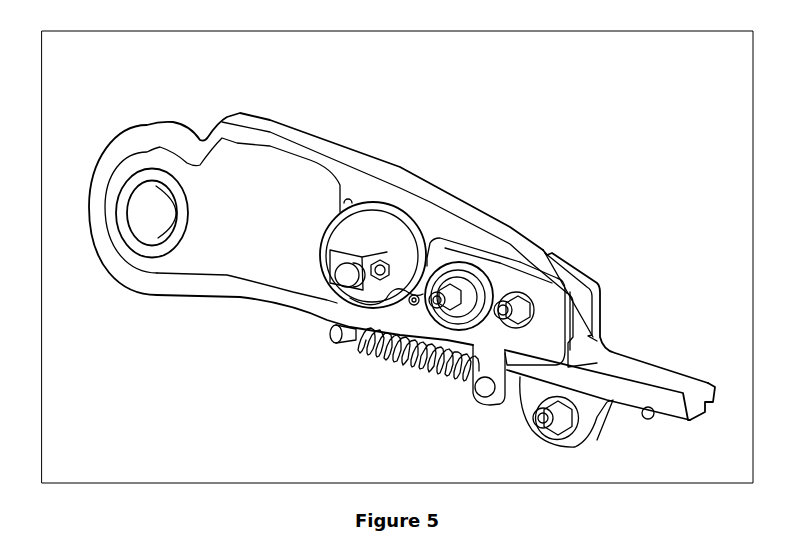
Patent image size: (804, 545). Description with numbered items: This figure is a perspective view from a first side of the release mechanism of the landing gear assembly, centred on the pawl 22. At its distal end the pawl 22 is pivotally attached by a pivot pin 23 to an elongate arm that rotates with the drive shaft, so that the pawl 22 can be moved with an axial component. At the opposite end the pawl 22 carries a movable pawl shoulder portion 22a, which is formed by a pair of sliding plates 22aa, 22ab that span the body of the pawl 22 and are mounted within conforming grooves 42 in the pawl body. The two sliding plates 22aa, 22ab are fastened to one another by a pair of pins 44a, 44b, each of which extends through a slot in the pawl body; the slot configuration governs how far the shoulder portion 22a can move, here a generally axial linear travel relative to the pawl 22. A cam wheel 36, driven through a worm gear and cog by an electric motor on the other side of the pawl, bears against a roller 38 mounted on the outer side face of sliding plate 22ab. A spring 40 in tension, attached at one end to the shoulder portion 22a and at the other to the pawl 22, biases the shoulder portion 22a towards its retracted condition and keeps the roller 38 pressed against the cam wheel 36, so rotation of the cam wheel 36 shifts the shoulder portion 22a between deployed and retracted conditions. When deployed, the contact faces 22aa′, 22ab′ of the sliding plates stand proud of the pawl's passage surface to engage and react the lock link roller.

The pawl 22 is at (248, 232).
The pivot pin 23 is at (147, 220).
The cam wheel 36 is at (347, 233).
The roller 38 is at (453, 273).
The spring 40 is at (382, 365).
The grooves 42 is at (442, 252).
The pin 44a is at (510, 293).
The pin 44b is at (458, 287).
The pawl shoulder portion 22a is at (604, 277).
The sliding plate 22aa is at (568, 282).
The contact face 22aa′ is at (597, 300).
The sliding plate 22ab is at (490, 353).
The contact face 22ab′ is at (567, 325).